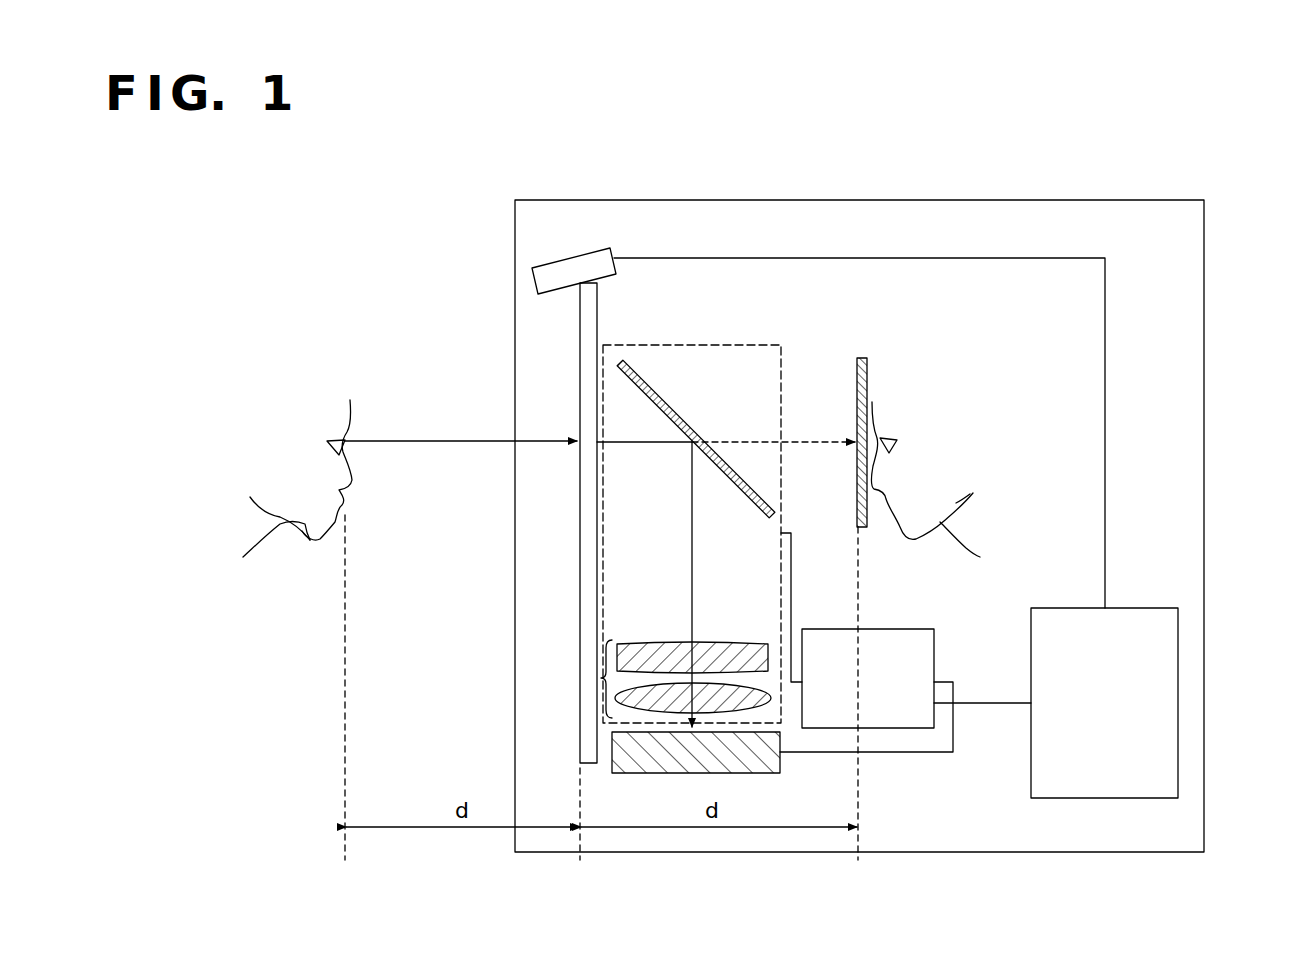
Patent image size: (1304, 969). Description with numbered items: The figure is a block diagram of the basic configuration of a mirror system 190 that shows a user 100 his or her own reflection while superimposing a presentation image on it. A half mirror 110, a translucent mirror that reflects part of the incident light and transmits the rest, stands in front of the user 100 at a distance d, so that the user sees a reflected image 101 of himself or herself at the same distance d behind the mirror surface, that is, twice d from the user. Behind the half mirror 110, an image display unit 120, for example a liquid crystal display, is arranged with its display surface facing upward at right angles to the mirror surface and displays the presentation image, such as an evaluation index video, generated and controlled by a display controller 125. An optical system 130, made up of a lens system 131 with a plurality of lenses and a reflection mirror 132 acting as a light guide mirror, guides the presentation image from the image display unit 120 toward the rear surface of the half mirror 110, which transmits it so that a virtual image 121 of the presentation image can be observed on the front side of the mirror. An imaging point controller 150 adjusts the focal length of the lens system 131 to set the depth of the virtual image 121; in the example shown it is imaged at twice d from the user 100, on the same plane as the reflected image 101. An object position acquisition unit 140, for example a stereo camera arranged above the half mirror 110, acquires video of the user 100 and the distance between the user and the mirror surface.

The user 100 is at (300, 537).
The reflected image 101 is at (970, 514).
The half mirror 110 is at (598, 308).
The image display unit 120 is at (650, 773).
The virtual image 121 is at (883, 344).
The display controller 125 is at (1139, 608).
The optical system 130 is at (772, 344).
The lens system 131 is at (605, 684).
The reflection mirror 132 is at (686, 394).
The object position acquisition unit 140 is at (562, 261).
The imaging point controller 150 is at (936, 655).
The mirror system 190 is at (597, 200).